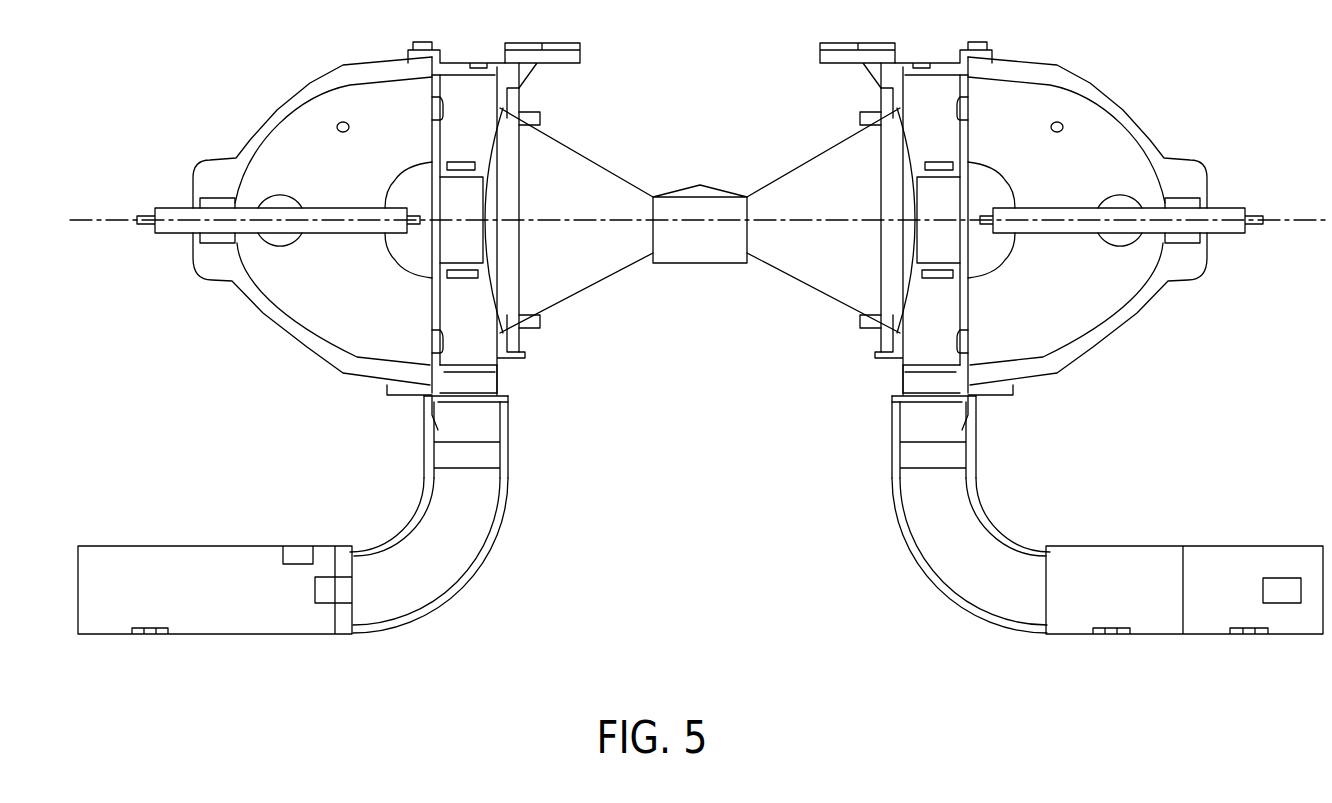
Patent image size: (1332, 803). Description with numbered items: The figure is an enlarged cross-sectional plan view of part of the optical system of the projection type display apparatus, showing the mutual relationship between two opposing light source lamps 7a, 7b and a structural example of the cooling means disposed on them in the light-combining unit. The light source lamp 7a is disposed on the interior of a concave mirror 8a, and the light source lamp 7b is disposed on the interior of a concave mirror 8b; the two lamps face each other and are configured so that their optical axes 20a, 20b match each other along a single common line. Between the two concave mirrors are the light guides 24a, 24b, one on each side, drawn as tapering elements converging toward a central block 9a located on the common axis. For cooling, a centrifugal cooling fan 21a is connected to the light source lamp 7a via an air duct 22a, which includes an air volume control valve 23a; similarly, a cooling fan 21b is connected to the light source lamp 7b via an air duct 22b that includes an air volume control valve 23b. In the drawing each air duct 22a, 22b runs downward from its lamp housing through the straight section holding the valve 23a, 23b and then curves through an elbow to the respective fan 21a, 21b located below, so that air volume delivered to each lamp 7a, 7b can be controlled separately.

The light source lamp 7a is at (282, 248).
The light source lamp 7b is at (1118, 248).
The concave mirror 8a is at (277, 120).
The concave mirror 8b is at (1123, 122).
The light guide / rod integrator 9a is at (702, 250).
The optical axis 20a is at (112, 217).
The optical axis 20b is at (1288, 217).
The cooling fan 21a is at (217, 620).
The cooling fan 21b is at (1158, 620).
The air duct 22a is at (445, 572).
The air duct 22b is at (955, 572).
The air volume control valve 23a is at (490, 455).
The air volume control valve 23b is at (910, 455).
The light guide 24a is at (587, 148).
The light guide 24b is at (813, 148).